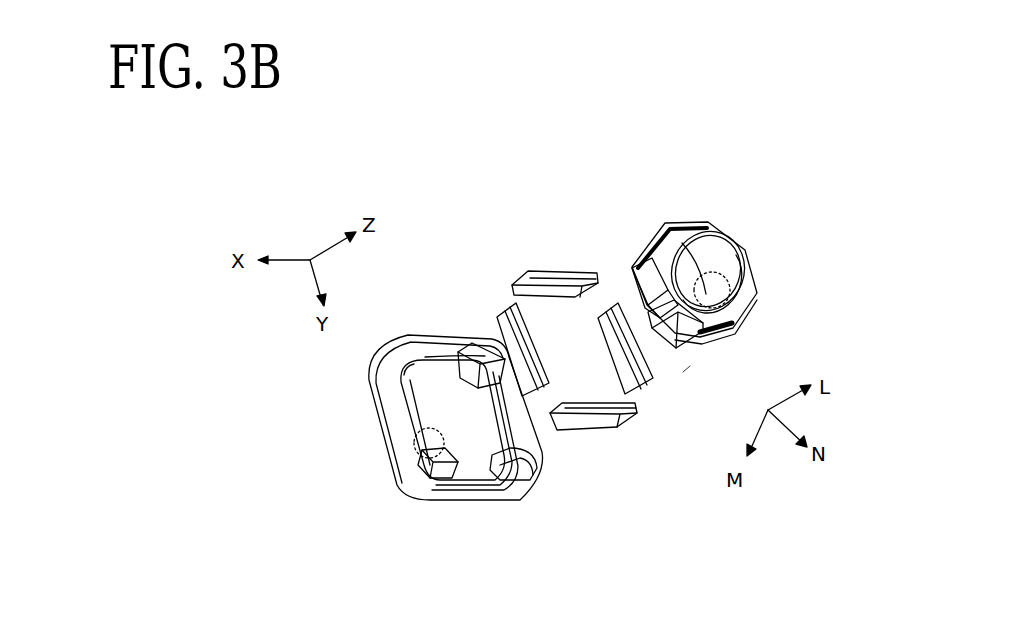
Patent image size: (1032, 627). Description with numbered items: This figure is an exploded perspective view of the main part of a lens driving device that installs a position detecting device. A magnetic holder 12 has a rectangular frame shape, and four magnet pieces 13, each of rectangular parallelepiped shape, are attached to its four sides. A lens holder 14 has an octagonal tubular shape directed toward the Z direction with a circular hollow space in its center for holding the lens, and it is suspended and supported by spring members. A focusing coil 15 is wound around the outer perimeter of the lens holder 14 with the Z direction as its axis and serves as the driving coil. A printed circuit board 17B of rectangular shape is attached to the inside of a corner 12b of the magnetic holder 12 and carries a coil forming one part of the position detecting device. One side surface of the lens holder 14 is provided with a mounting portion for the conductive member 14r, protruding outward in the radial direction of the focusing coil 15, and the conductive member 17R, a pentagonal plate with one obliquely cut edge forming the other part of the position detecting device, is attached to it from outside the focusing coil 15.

The magnetic holder 12 is at (466, 506).
The corner of the magnetic holder 12b is at (414, 434).
The magnet piece 13 is at (549, 266).
The lens holder 14 is at (710, 218).
The mounting portion for the conductive member 14r is at (730, 287).
The focusing coil 15 is at (650, 229).
The conductive member 17R is at (715, 343).
The printed circuit board 17B is at (685, 372).